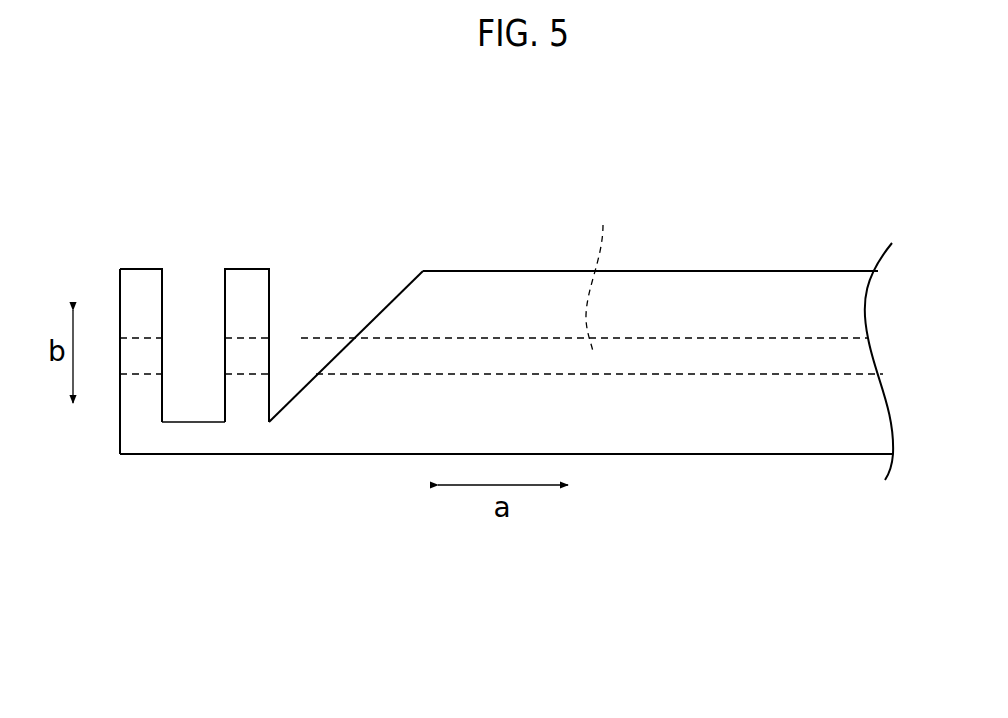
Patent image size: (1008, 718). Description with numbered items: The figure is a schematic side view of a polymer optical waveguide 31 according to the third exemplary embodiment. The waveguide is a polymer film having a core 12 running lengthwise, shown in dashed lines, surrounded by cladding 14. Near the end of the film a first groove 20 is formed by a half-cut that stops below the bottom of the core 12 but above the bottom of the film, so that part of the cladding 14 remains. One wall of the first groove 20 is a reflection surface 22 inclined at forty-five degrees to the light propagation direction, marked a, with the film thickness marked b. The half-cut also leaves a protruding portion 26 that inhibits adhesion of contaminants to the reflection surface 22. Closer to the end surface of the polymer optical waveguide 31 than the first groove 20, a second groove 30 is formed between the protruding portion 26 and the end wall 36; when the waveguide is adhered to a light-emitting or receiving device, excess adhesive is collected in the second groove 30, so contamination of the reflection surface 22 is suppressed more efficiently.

The core 12 is at (601, 272).
The cladding 14 is at (762, 283).
The first groove 20 is at (327, 300).
The reflection surface 22 is at (392, 299).
The protruding portion 26 is at (247, 269).
The second groove 30 is at (202, 302).
The polymer optical waveguide 31 is at (688, 217).
The side wall 36 is at (133, 269).